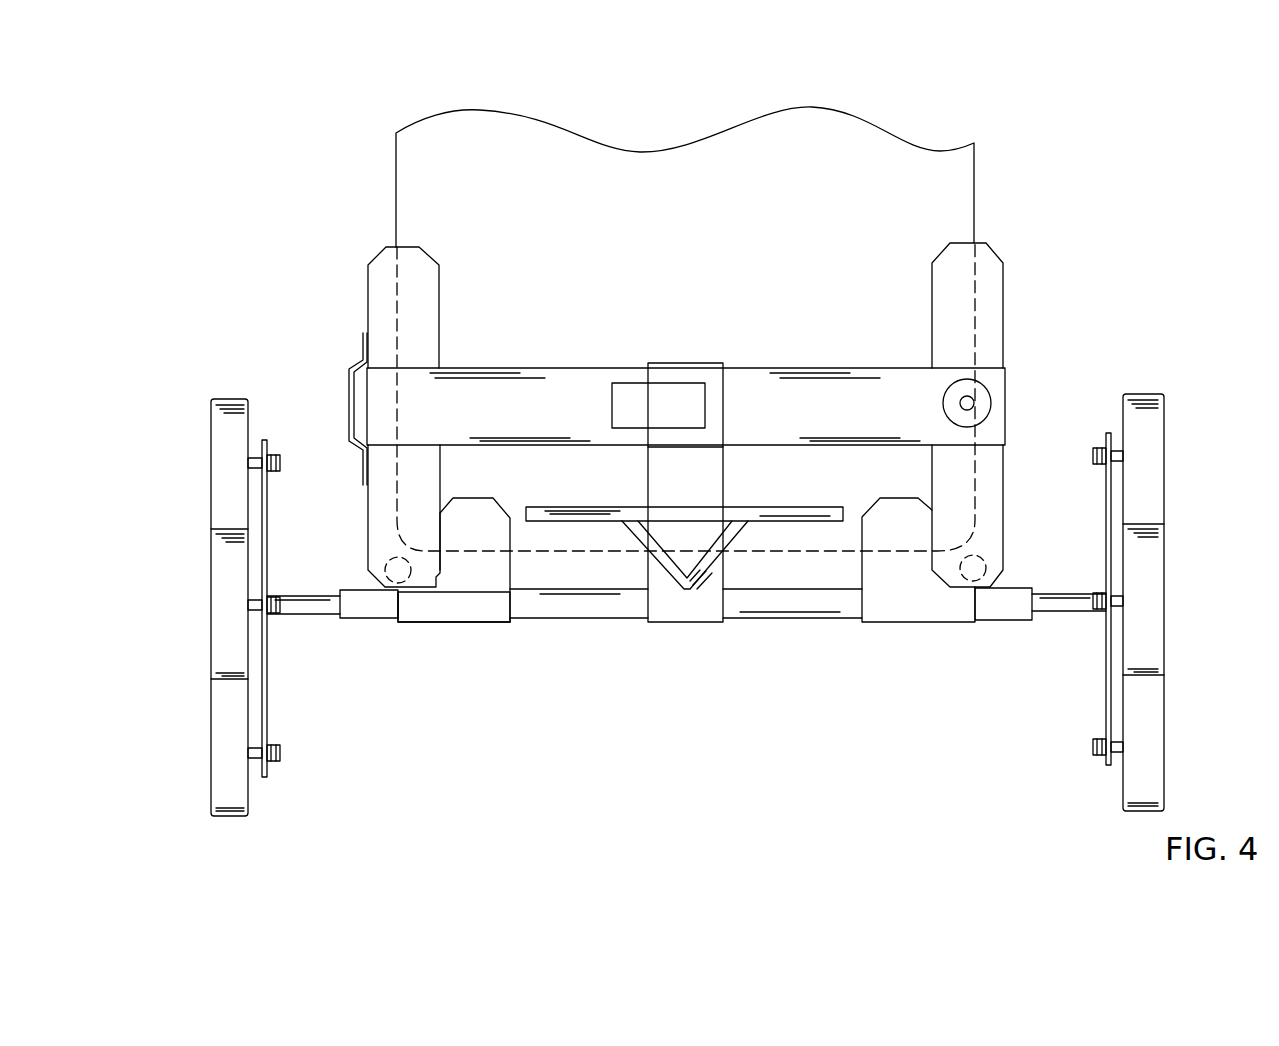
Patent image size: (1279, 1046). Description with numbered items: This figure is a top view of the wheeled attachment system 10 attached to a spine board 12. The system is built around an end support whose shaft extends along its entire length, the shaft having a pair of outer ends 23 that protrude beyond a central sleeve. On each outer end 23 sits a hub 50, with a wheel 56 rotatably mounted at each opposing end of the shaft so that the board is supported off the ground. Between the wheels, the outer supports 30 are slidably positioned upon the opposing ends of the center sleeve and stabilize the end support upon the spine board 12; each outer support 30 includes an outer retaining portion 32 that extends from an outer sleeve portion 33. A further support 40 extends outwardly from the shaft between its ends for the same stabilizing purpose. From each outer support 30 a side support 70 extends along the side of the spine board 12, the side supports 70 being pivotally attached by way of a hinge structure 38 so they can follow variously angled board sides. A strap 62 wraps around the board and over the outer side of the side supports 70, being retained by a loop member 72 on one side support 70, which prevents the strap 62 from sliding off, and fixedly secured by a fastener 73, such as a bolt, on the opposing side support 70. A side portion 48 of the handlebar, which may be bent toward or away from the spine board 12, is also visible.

The wheeled attachment system 10 is at (260, 168).
The spine board 12 is at (932, 205).
The outer end 23 is at (1055, 605).
The outer support 30 is at (490, 622).
The outer retaining portion 32 is at (488, 527).
The outer sleeve portion 33 is at (462, 606).
The hinge structure 38 is at (375, 598).
The support 40 is at (685, 622).
The side portion 48 is at (808, 512).
The hub 50 is at (271, 698).
The wheel 56 is at (225, 637).
The strap 62 is at (383, 420).
The side support 70 is at (378, 292).
The loop member 72 is at (352, 372).
The fastener 73 is at (982, 395).